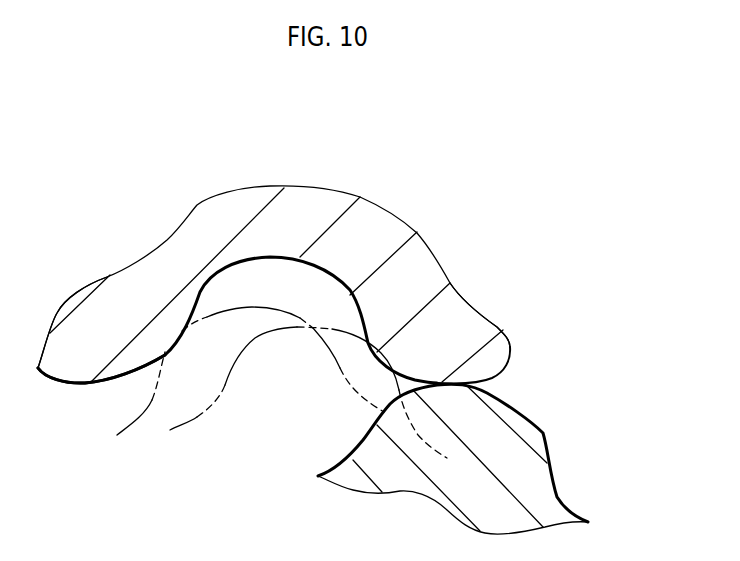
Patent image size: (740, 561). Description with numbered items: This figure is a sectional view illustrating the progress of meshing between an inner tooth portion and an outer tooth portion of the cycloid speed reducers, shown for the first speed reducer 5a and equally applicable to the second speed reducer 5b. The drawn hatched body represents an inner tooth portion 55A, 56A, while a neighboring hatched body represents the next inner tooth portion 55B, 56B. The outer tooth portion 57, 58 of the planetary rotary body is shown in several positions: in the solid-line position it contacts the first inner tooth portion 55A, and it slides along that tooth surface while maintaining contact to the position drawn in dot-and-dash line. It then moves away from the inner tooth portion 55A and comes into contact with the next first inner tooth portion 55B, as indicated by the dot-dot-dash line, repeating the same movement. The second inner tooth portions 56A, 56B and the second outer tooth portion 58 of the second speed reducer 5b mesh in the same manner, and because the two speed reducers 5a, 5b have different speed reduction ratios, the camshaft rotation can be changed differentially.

The first speed reducer 5a is at (311, 280).
The second speed reducer 5b is at (485, 232).
The first inner tooth portion 55A is at (549, 333).
The second inner tooth portion 56A is at (483, 354).
The next first inner tooth portion 55B is at (98, 374).
The next second inner tooth portion 56B is at (72, 365).
The first outer tooth portion 57 is at (387, 341).
The second outer tooth portion 58 is at (230, 307).